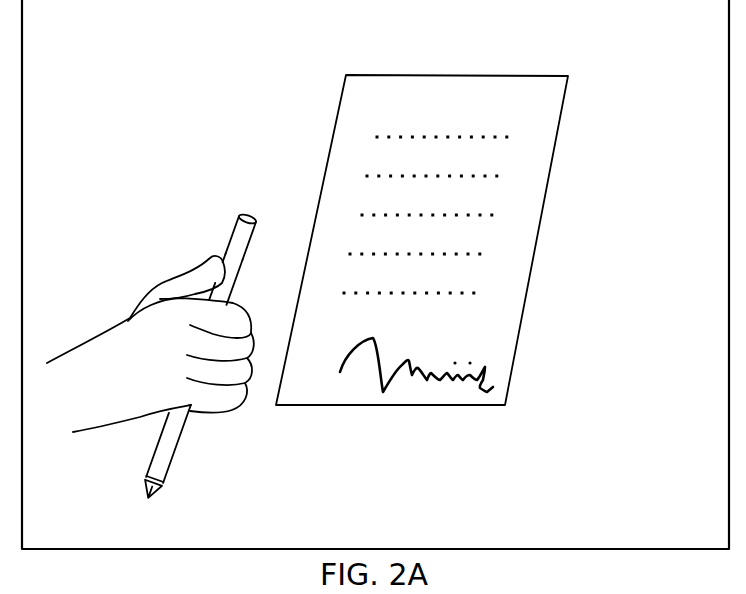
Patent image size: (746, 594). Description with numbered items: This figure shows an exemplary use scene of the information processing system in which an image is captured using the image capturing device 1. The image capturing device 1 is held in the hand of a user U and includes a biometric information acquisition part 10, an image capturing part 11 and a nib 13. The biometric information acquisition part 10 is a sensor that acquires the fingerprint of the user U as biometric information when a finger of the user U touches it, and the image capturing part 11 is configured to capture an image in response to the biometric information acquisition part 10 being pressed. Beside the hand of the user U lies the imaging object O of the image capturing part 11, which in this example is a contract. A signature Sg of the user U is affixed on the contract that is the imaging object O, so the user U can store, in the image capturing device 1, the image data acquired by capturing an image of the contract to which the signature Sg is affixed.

The image capturing device 1 is at (225, 341).
The biometric information acquisition part 10 is at (232, 283).
The image capturing part 11 is at (247, 253).
The nib 13 is at (160, 487).
The user U is at (170, 278).
The imaging object O is at (549, 75).
The signature Sg is at (427, 388).